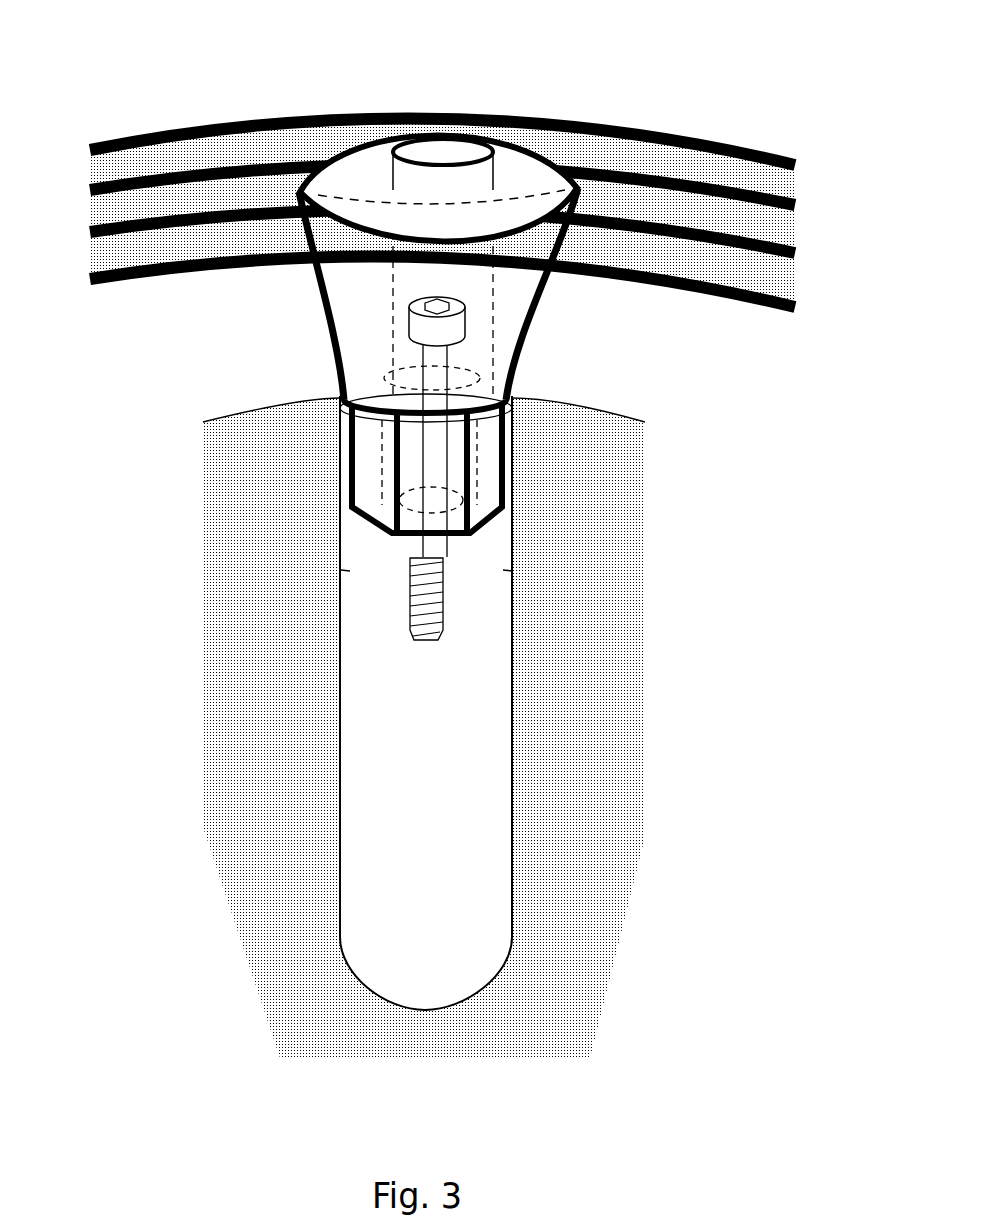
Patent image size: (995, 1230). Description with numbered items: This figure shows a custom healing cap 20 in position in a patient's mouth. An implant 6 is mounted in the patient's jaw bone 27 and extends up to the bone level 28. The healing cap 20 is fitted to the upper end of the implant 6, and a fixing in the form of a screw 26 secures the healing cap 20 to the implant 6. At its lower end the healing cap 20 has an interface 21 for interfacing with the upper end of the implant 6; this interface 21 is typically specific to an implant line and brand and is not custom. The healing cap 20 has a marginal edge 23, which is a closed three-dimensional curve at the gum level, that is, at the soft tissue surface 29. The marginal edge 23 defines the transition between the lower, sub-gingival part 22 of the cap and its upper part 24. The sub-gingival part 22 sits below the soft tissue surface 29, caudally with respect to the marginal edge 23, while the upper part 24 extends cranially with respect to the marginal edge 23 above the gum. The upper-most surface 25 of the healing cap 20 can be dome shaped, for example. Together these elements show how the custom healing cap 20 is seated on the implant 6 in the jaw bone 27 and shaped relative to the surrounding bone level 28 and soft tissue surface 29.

The implant 6 is at (473, 668).
The healing cap 20 is at (552, 332).
The interface 21 is at (485, 447).
The sub-gingival part 22 is at (537, 285).
The marginal edge 23 is at (335, 212).
The upper part 24 is at (520, 170).
The upper-most surface 25 is at (355, 152).
The screw 26 is at (437, 330).
The jaw bone 27 is at (258, 563).
The bone level 28 is at (208, 422).
The soft tissue surface 29 is at (160, 157).